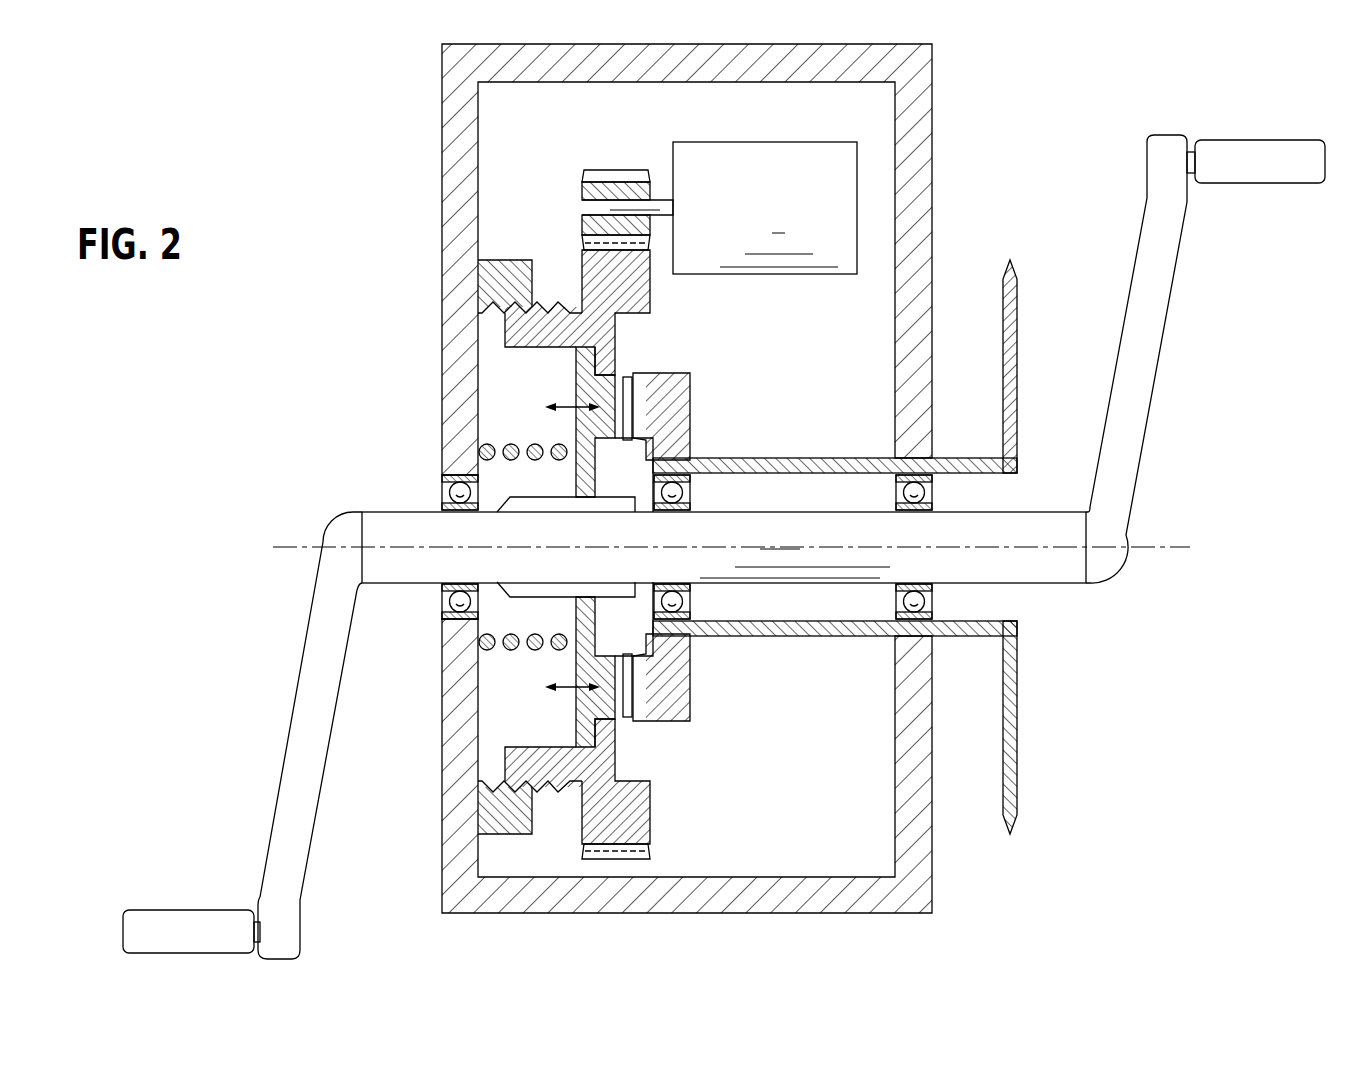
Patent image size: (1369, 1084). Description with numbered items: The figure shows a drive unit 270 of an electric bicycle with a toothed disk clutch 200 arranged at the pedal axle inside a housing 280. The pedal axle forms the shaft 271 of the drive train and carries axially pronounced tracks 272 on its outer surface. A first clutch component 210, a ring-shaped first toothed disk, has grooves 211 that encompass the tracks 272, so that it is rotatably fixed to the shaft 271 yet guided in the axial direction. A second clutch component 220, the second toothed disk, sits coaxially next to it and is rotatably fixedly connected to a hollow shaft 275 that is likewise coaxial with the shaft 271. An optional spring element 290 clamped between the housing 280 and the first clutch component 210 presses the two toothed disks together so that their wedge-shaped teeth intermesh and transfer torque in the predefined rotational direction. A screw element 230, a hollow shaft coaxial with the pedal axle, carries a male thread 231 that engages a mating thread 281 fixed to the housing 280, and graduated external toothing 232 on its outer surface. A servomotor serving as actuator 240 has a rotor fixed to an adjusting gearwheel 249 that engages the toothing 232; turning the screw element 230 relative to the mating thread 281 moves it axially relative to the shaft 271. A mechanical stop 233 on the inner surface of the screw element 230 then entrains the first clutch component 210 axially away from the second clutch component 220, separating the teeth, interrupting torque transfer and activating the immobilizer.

The clutch 200 is at (537, 416).
The first clutch component 210 is at (590, 427).
The grooves 211 is at (577, 505).
The second clutch component 220 is at (663, 403).
The screw element 230 is at (620, 290).
The thread 231 is at (547, 314).
The toothing 232 is at (583, 240).
The mechanical stop 233 is at (605, 358).
The actuator 240 is at (760, 185).
The adjusting gearwheel 249 is at (614, 185).
The drive unit 270 is at (1002, 154).
The shaft 271 is at (387, 529).
The tracks 272 is at (530, 595).
The hollow shaft 275 is at (838, 625).
The housing 280 is at (460, 165).
The mating thread 281 is at (483, 313).
The spring element 290 is at (510, 648).